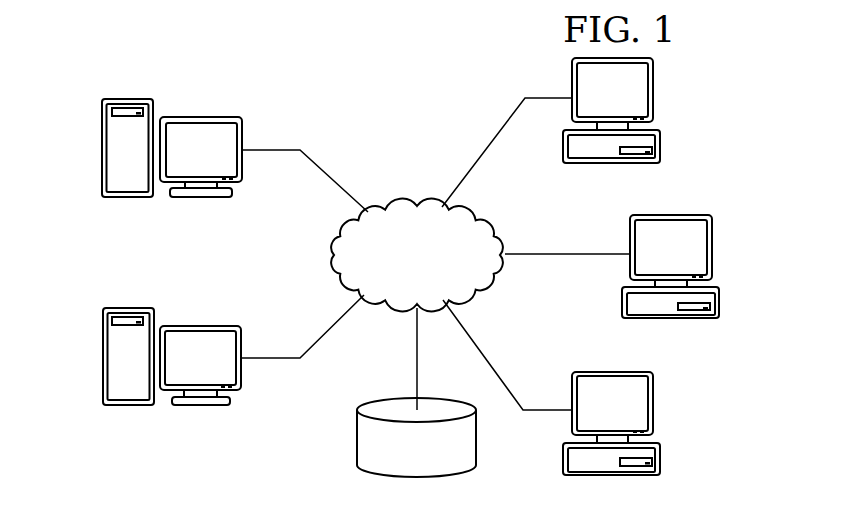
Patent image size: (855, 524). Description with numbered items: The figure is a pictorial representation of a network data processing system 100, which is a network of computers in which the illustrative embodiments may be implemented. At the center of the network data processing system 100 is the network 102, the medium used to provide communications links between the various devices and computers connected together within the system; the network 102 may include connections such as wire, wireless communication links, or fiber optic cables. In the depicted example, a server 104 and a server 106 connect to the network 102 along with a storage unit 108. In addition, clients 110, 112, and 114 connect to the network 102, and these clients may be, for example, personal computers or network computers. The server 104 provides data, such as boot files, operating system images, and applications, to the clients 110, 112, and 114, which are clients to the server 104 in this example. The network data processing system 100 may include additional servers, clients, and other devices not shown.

The network data processing system 100 is at (300, 70).
The network 102 is at (410, 203).
The server 104 is at (102, 147).
The server 106 is at (103, 355).
The storage unit 108 is at (357, 438).
The client 110 is at (662, 147).
The client 112 is at (720, 305).
The client 114 is at (660, 458).